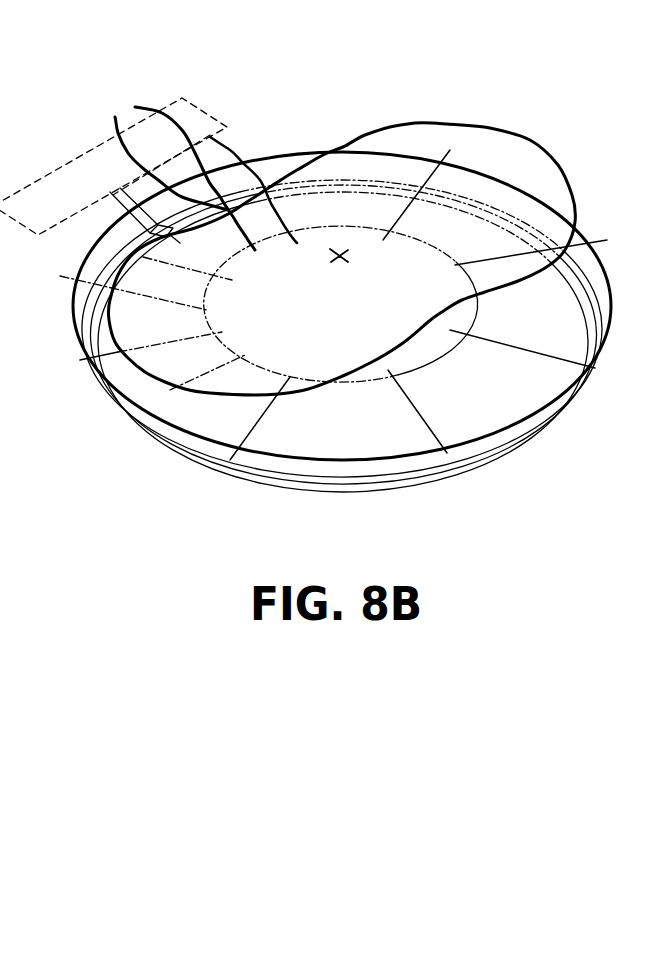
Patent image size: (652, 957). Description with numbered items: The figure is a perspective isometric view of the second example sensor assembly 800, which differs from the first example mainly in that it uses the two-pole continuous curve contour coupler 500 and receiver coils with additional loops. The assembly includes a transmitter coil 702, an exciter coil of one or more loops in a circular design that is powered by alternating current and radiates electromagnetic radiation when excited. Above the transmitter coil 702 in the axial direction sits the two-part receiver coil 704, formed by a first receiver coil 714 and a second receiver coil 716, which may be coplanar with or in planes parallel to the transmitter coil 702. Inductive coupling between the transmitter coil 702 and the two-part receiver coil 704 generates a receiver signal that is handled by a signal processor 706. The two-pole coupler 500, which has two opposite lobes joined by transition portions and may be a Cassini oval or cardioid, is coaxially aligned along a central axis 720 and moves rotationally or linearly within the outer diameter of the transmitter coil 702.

The two-pole continuous curve contour coupler 500 is at (447, 124).
The transmitter coil 702 is at (287, 490).
The two-part receiver coil 704 is at (212, 423).
The signal processor 706 is at (80, 175).
The first receiver coil 714 is at (338, 228).
The second receiver coil 716 is at (613, 213).
The central axis 720 is at (338, 263).
The second example sensor assembly 800 is at (555, 98).